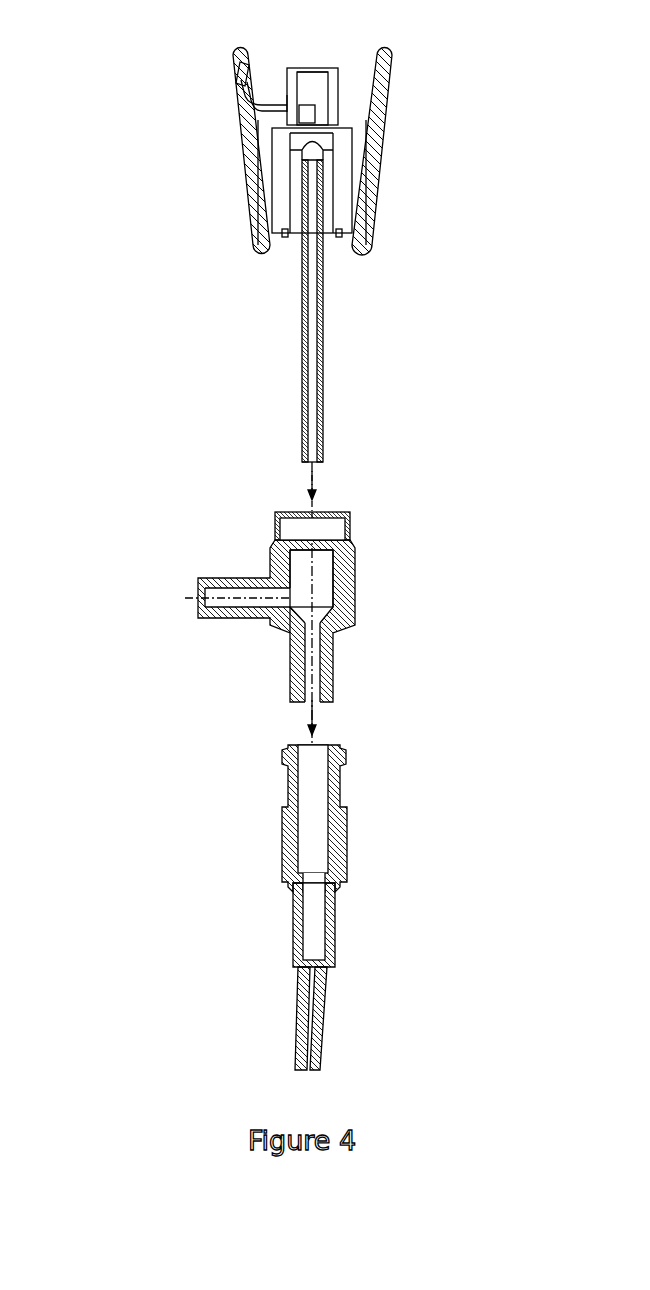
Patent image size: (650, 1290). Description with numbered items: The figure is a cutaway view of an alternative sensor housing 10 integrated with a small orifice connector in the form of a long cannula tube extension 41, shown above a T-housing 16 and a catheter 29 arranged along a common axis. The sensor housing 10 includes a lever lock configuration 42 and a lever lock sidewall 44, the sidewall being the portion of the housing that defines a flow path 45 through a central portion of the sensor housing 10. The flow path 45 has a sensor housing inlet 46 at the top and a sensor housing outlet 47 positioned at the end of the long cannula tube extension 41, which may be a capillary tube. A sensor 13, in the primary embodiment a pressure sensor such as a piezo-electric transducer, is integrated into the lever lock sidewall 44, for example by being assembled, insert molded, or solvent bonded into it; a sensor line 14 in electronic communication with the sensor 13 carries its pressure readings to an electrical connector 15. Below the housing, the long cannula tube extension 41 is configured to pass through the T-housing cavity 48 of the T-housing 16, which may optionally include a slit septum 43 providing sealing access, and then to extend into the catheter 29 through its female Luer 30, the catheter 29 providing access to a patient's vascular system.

The sensor housing 10 is at (425, 128).
The sensor 13 is at (298, 125).
The sensor line 14 is at (182, 114).
The electrical connector 15 is at (181, 82).
The T-housing 16 is at (209, 546).
The catheter 29 is at (237, 877).
The female Luer 30 is at (293, 723).
The long cannula tube extension 41 is at (332, 407).
The lever lock configuration 42 is at (386, 242).
The slit septum 43 is at (292, 503).
The lever lock sidewall 44 is at (278, 108).
The flow path 45 is at (325, 73).
The sensor housing inlet 46 is at (295, 41).
The sensor housing outlet 47 is at (332, 482).
The T-housing cavity 48 is at (331, 585).